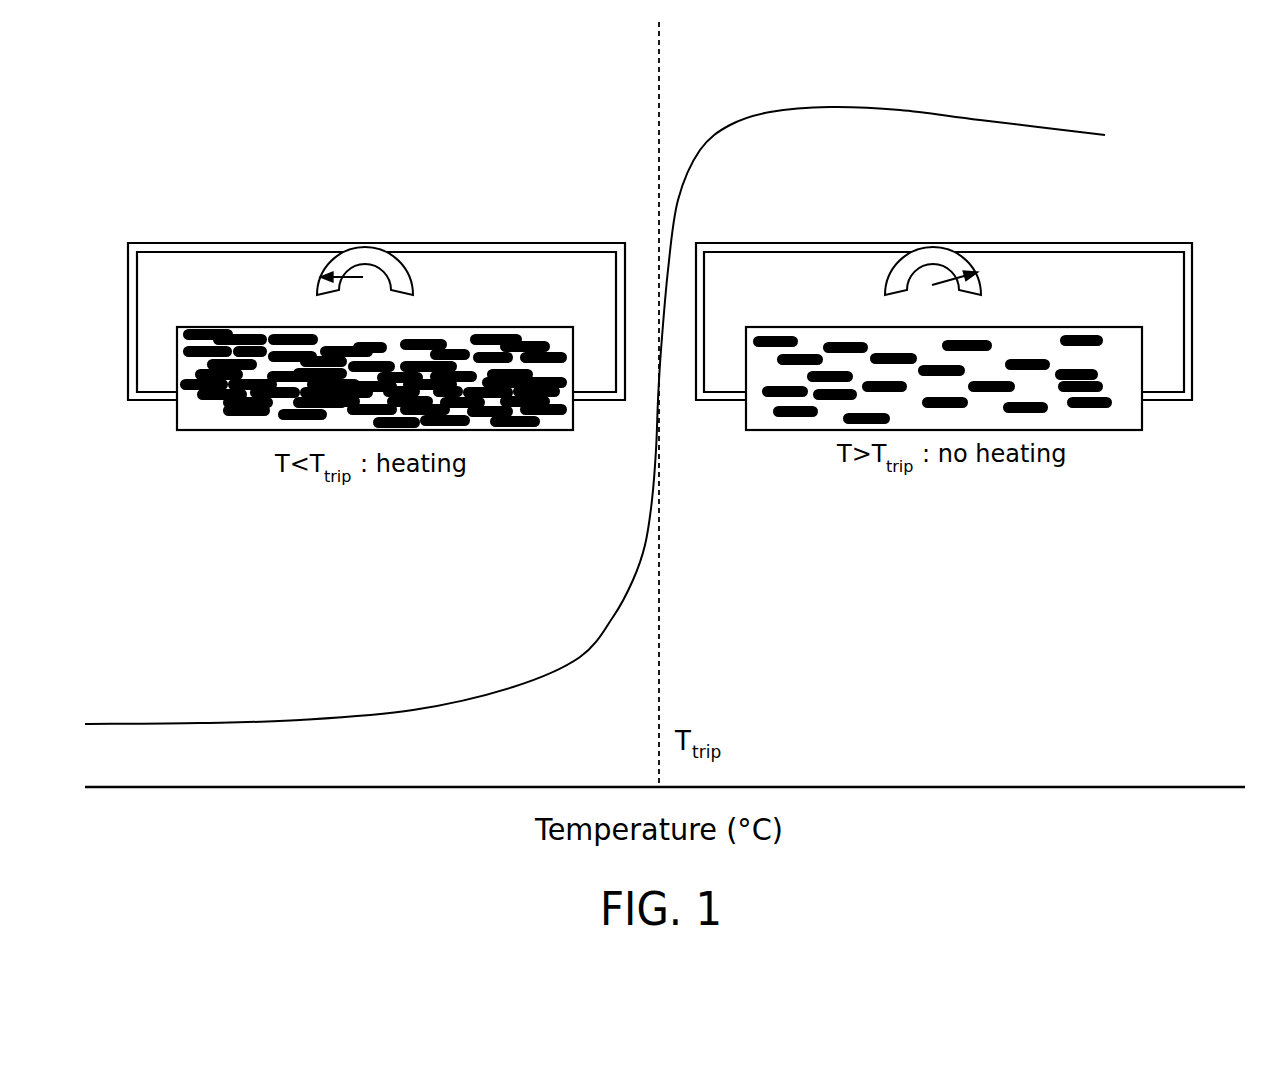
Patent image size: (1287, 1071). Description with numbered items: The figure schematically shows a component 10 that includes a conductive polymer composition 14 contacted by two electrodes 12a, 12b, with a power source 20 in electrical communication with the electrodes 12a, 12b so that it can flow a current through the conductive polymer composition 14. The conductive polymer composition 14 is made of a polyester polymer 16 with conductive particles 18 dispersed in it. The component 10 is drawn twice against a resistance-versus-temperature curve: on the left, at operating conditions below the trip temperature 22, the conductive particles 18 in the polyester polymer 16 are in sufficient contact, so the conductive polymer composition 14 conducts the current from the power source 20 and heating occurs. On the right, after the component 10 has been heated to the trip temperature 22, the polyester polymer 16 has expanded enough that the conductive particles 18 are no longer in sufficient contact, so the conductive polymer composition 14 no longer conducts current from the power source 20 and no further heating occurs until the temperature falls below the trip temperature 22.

The component 10 is at (152, 110).
The electrode 12a is at (177, 400).
The electrode 12b is at (575, 400).
The conductive polymer composition 14 is at (545, 436).
The polyester polymer 16 is at (258, 420).
The conductive particles 18 is at (235, 408).
The power source 20 is at (364, 240).
The trip temperature 22 is at (658, 357).